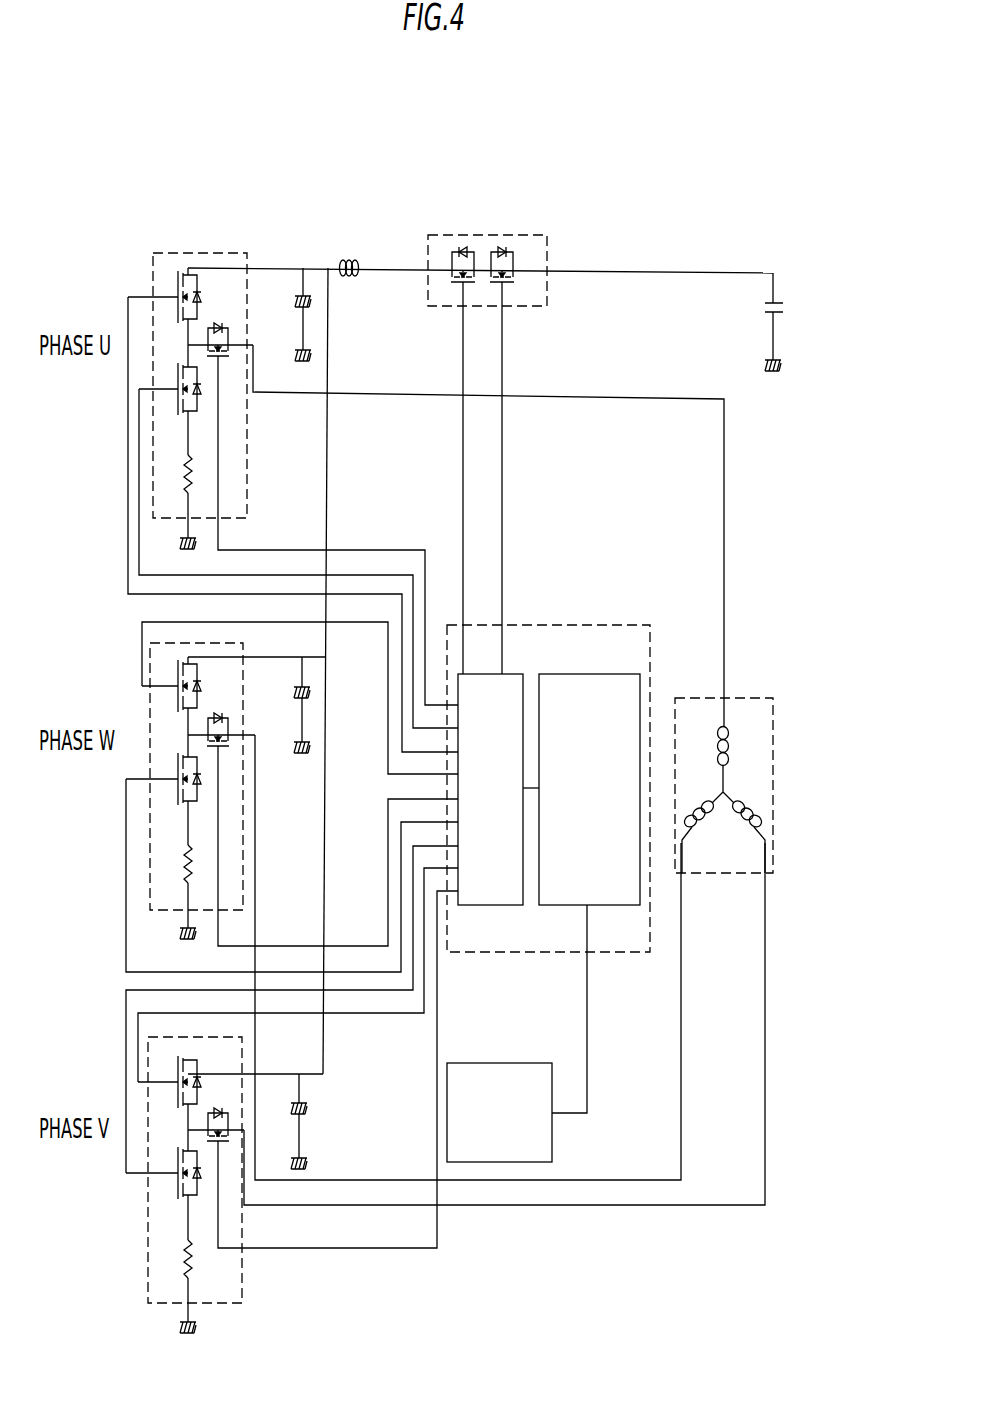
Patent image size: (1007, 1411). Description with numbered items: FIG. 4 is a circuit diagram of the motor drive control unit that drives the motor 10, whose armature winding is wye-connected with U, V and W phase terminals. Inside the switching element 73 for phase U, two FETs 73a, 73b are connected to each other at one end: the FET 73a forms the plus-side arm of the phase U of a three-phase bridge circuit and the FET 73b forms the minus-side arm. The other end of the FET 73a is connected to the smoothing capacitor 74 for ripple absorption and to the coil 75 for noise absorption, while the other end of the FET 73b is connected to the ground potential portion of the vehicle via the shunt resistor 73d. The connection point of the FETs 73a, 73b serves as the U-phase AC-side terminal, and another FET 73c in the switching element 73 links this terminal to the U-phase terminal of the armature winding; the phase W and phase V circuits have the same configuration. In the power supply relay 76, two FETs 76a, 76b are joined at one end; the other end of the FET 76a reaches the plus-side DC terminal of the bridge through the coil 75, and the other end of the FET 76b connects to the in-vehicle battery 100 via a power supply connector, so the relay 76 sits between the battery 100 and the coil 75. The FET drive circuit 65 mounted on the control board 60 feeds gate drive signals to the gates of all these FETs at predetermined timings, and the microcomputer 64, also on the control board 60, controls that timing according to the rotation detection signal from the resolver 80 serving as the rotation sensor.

The motor 10 is at (757, 722).
The control board 60 is at (552, 783).
The microcomputer 64 is at (593, 673).
The FET drive circuit 65 is at (480, 673).
The switching element 73 is at (165, 257).
The FET 73a is at (166, 293).
The FET 73b is at (171, 400).
The FET 73c is at (224, 330).
The shunt resistor 73d is at (181, 480).
The smoothing capacitor 74 is at (309, 290).
The coil 75 is at (352, 262).
The power supply relay 76 is at (522, 406).
The FET 76a is at (478, 250).
The FET 76b is at (514, 250).
The resolver 80 is at (518, 1163).
The battery 100 is at (780, 293).